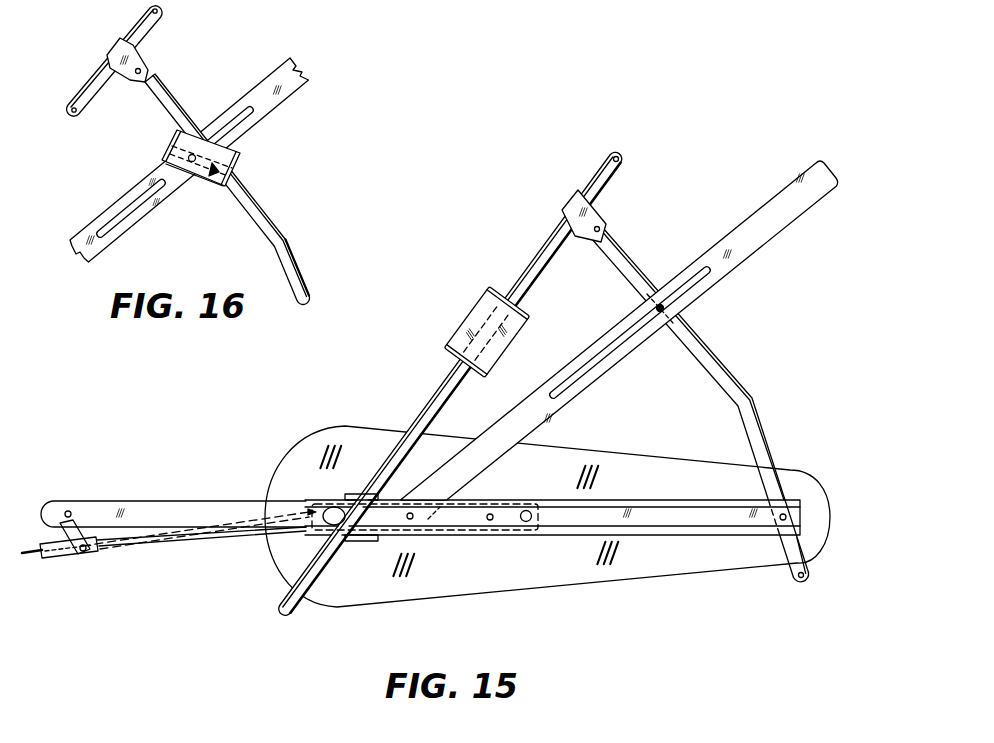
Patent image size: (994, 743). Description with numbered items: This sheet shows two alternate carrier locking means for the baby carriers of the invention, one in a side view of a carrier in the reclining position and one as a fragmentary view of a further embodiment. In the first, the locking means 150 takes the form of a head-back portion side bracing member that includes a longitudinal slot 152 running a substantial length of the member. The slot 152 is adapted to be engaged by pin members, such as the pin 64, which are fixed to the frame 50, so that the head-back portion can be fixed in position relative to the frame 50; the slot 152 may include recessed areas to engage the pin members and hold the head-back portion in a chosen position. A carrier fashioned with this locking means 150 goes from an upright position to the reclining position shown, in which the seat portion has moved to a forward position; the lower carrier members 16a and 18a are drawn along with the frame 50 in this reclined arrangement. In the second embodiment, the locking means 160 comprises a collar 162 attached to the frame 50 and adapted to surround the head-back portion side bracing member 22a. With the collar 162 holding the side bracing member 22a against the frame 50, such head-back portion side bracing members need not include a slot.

In FIG. 15, the frame 50 is at (532, 253).
In FIG. 16, the frame 50 is at (262, 213).
In FIG. 15, the channel member 16a is at (552, 541).
In FIG. 15, the actuating lever 18a is at (135, 544).
In FIG. 15, the carrier locking means 150 is at (706, 316).
In FIG. 15, the longitudinal slot 152 is at (703, 263).
In FIG. 15, the pivot pin 64 is at (649, 310).
In FIG. 16, the head-back portion side bracing member 22a is at (284, 73).
In FIG. 16, the carrier locking means 160 is at (267, 154).
In FIG. 16, the collar 162 is at (207, 187).